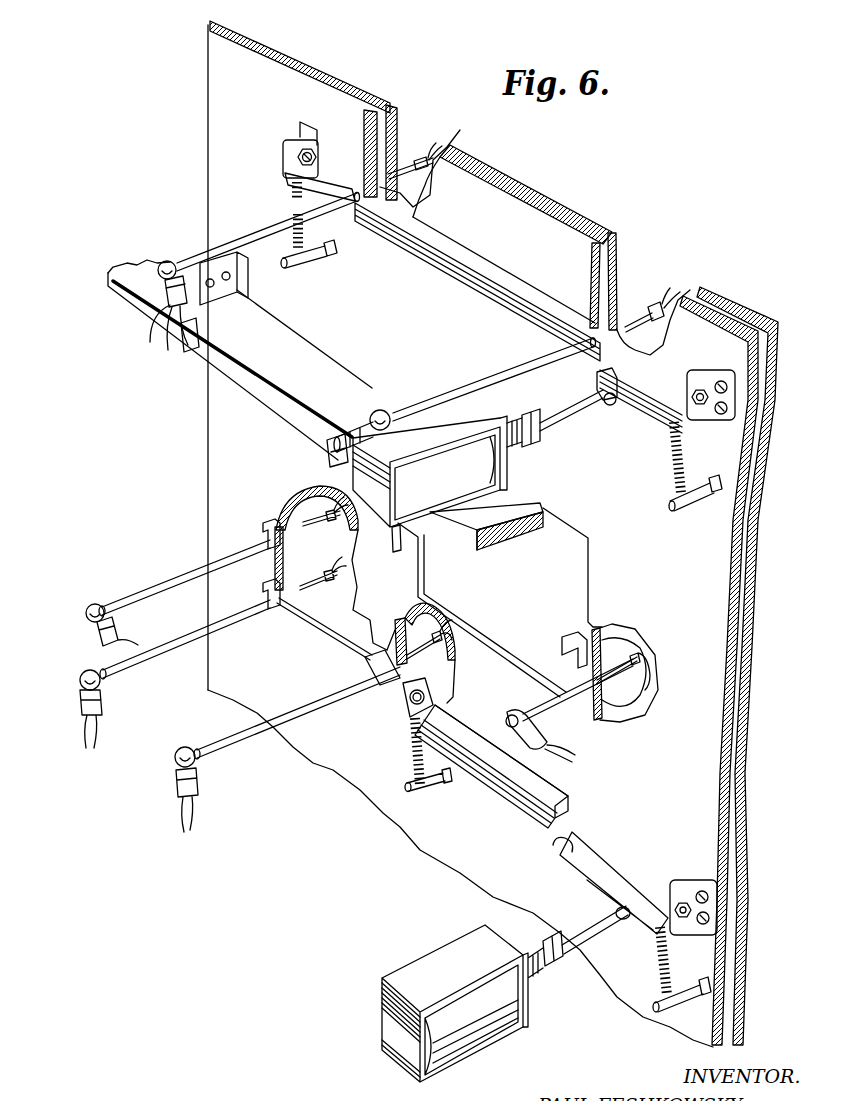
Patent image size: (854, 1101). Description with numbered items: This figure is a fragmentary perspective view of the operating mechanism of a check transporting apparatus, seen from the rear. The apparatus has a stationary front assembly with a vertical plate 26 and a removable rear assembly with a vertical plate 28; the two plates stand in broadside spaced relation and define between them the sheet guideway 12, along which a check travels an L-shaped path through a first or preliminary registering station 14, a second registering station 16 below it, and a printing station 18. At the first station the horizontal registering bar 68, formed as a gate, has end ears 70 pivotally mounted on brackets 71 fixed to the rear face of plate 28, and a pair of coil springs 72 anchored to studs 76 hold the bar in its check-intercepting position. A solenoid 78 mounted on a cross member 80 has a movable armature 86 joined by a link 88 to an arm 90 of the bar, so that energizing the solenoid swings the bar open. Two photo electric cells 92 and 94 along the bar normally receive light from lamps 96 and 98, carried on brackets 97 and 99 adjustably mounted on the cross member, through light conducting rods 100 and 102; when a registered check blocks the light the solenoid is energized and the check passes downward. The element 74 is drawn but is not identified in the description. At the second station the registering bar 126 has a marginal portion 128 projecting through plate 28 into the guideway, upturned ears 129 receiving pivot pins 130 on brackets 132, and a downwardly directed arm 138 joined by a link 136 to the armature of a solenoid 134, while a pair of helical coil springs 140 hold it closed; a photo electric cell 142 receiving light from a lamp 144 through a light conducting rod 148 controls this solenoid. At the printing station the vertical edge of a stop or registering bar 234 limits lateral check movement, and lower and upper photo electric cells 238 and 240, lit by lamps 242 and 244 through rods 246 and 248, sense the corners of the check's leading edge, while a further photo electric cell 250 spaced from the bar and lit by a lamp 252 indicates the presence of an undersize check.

The sheet guideway 12 is at (553, 207).
The first or preliminary sheet registering station 14 is at (543, 293).
The second sheet registering station 16 is at (542, 778).
The third sheet registering and information processing or printing station 18 is at (317, 634).
The vertical plate 26 is at (387, 120).
The vertical plate 28 is at (218, 81).
The registering member or bar 68 is at (475, 270).
The end ears 70 is at (283, 158).
The brackets 71 is at (298, 130).
The coil springs 72 is at (290, 198).
The rail 74 is at (463, 288).
The studs 76 is at (290, 262).
The electrically operated actuator or solenoid 78 is at (487, 457).
The cross member 80 is at (293, 350).
The movable armature 86 is at (533, 443).
The link 88 is at (560, 425).
The arm 90 is at (597, 380).
The photo electric cell 92 is at (419, 155).
The photo electric cell 94 is at (652, 305).
The lamp 96 is at (162, 262).
The bracket 97 is at (199, 327).
The lamp 98 is at (378, 410).
The bracket 99 is at (327, 450).
The light conducting rod 100 is at (255, 233).
The light conducting rod 102 is at (467, 383).
The registering bar 126 is at (470, 783).
The longitudinal marginal portion 128 is at (433, 700).
The upturned ears 129 is at (393, 700).
The pivot pins 130 is at (686, 925).
The brackets 132 is at (695, 880).
The electrically operated actuator or solenoid 134 is at (470, 1037).
The link 136 is at (592, 935).
The downwardly directed arm 138 is at (614, 911).
The helical coil springs 140 is at (412, 760).
The switch or photo electric cell 142 is at (447, 637).
The lamp 144 is at (172, 762).
The light conducting rod 148 is at (237, 743).
The stop or registering bar 234 is at (205, 25).
The lower photo electric cell 238 is at (343, 568).
The upper photo electric cell 240 is at (333, 497).
The lamp 242 is at (85, 672).
The lamp 244 is at (97, 607).
The light conducting rod 246 is at (147, 657).
The light conducting rod 248 is at (165, 581).
The photo electric cell 250 is at (627, 660).
The electric lamp 252 is at (513, 717).